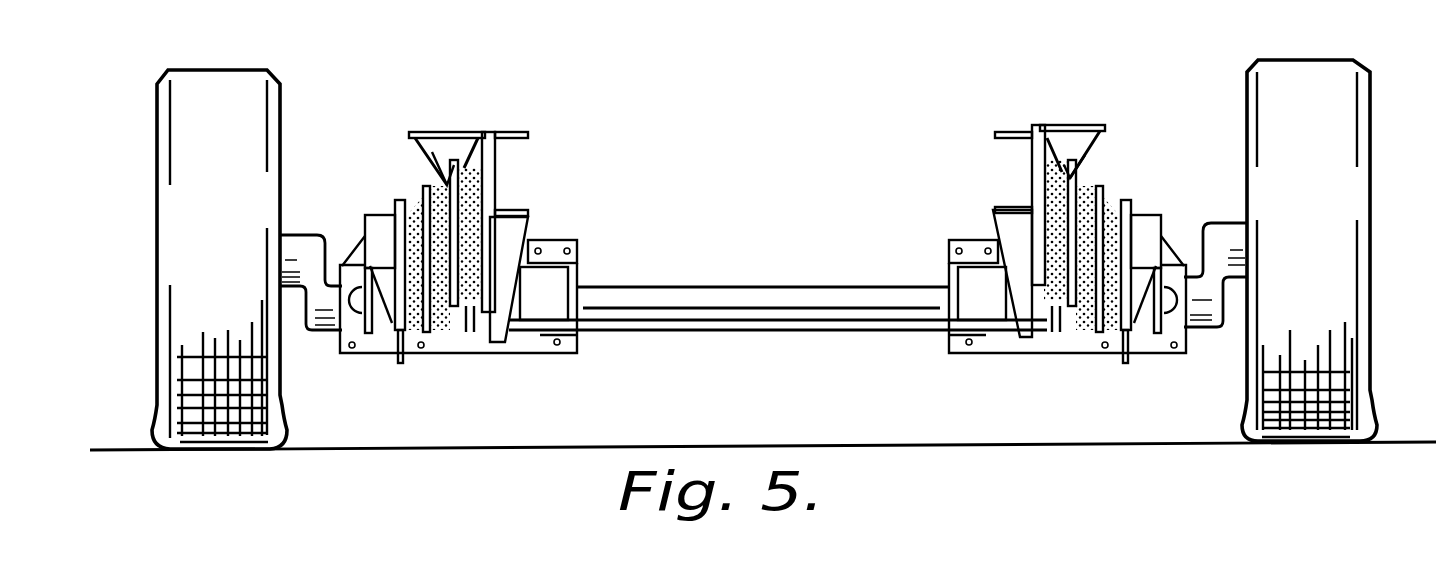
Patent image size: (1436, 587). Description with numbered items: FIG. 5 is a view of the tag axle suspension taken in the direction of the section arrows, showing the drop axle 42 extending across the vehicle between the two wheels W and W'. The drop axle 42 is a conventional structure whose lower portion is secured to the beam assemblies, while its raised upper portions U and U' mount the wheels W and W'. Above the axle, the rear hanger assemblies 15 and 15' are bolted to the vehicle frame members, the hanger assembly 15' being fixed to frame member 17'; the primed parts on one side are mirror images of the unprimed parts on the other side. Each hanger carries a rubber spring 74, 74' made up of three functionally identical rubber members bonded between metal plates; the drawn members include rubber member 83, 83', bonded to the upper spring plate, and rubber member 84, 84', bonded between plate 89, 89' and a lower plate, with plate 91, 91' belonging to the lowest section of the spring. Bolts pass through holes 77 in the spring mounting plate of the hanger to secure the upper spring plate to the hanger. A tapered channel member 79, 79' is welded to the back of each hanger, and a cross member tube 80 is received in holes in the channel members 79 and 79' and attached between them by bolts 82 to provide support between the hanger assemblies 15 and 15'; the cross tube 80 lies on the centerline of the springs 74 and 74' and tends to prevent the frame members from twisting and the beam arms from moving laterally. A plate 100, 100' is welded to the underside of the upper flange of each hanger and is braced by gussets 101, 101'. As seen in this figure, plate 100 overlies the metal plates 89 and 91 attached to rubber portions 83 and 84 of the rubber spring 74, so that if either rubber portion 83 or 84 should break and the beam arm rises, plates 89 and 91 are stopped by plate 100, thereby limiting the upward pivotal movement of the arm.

The rear hanger assembly 15 is at (447, 93).
The rear hanger assembly 15' is at (1064, 89).
The plate 100 is at (421, 133).
The plate 100' is at (1097, 114).
The gussets 101 is at (388, 153).
The gussets 101' is at (1135, 131).
The holes 77 is at (507, 131).
The frame member 17' is at (990, 107).
The rubber spring assembly 74 is at (526, 222).
The rubber spring 74' is at (1003, 205).
The tapered channel member 79 is at (553, 258).
The channel member 79' is at (968, 263).
The plate 89 is at (413, 243).
The plate 89' is at (1127, 225).
The plate 91 is at (369, 274).
The plate 91' is at (1156, 255).
The bolts 82 is at (484, 352).
The rubber member 83 is at (471, 366).
The rubber member 83' is at (1045, 363).
The rubber member 84 is at (407, 333).
The rubber member 84' is at (1121, 340).
The drop axle 42 is at (765, 300).
The cross member tube 80 is at (810, 330).
The upper portion of drop axle U is at (1215, 255).
The upper portion of drop axle U' is at (311, 262).
The wheel W is at (1337, 250).
The wheel W' is at (187, 259).